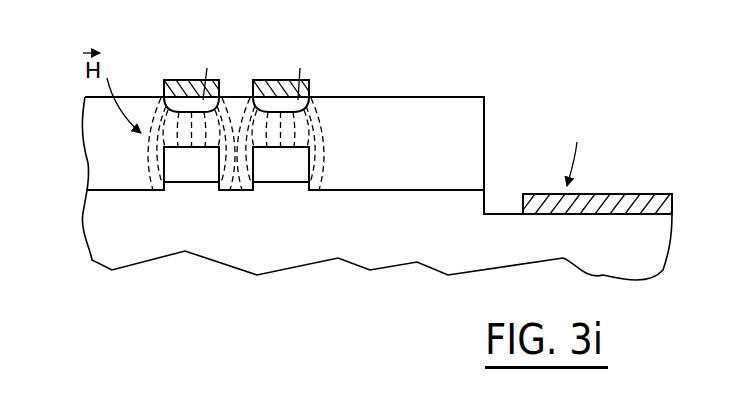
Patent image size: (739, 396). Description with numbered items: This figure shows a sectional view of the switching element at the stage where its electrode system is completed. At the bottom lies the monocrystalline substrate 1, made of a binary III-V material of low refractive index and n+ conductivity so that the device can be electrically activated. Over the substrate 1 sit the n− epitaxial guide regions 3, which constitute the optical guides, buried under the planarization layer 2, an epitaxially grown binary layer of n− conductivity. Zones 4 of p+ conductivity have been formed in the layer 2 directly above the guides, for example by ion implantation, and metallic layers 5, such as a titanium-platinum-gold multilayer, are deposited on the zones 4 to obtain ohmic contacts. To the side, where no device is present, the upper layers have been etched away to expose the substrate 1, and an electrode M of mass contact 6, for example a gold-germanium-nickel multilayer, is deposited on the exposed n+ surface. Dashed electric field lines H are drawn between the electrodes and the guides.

The monocrystalline substrate 1 is at (527, 247).
The planarization layer 2 is at (470, 119).
The guide layer 3 is at (298, 167).
The zones of p+ conductivity type 4 is at (165, 97).
The metallic layers 5 is at (178, 87).
The mass contacts 6 is at (617, 203).